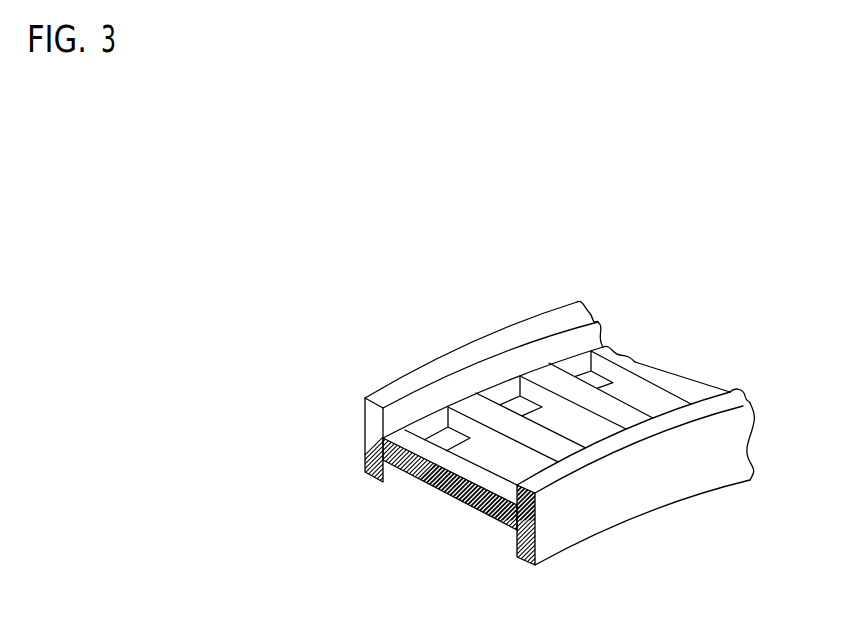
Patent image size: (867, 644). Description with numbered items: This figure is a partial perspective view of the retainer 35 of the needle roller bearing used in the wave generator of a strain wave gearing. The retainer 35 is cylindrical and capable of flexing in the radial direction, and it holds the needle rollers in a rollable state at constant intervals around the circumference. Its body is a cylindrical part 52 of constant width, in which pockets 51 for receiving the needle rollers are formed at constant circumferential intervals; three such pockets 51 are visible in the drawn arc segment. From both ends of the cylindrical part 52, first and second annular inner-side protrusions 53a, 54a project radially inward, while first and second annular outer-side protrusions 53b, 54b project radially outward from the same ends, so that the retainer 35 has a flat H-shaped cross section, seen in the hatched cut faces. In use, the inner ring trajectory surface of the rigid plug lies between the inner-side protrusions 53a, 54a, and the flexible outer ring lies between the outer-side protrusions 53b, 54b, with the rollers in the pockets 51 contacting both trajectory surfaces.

The retainer 35 is at (743, 367).
The pockets 51 is at (472, 423).
The cylindrical part 52 is at (432, 484).
The first annular inner-side protrusion 53a is at (541, 570).
The first annular outer-side protrusion 53b is at (540, 503).
The second annular inner-side protrusion 54a is at (364, 457).
The second annular outer-side protrusion 54b is at (363, 412).